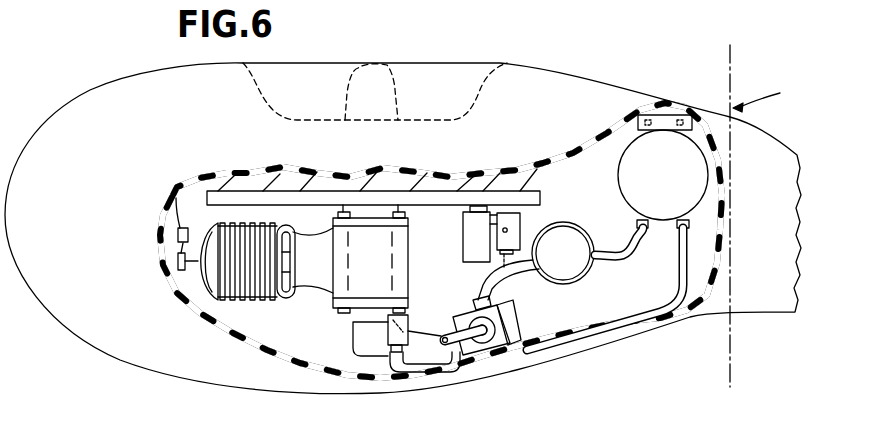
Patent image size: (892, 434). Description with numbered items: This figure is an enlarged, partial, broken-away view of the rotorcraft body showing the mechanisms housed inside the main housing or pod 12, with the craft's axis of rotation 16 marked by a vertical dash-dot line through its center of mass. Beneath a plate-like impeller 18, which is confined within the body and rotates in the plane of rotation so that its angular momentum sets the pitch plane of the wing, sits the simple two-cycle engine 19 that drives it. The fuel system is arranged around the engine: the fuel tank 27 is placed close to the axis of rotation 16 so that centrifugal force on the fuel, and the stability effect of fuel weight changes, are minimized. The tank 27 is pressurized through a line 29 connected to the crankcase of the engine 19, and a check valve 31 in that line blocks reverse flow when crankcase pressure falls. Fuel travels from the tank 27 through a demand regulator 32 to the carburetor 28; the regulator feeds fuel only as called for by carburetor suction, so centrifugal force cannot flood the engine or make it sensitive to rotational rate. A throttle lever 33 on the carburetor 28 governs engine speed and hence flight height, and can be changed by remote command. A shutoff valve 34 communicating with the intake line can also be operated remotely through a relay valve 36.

The main housing or pod 12 is at (143, 88).
The axis of rotation 16 is at (727, 63).
The impeller 18 is at (465, 200).
The two-cycle engine 19 is at (320, 286).
The fuel tank 27 is at (676, 187).
The carburetor 28 is at (470, 352).
The line 29 is at (395, 367).
The check valve 31 is at (412, 334).
The demand regulator 32 is at (572, 268).
The throttle lever 33 is at (462, 322).
The shutoff valve 34 is at (517, 230).
The relay valve 36 is at (472, 240).